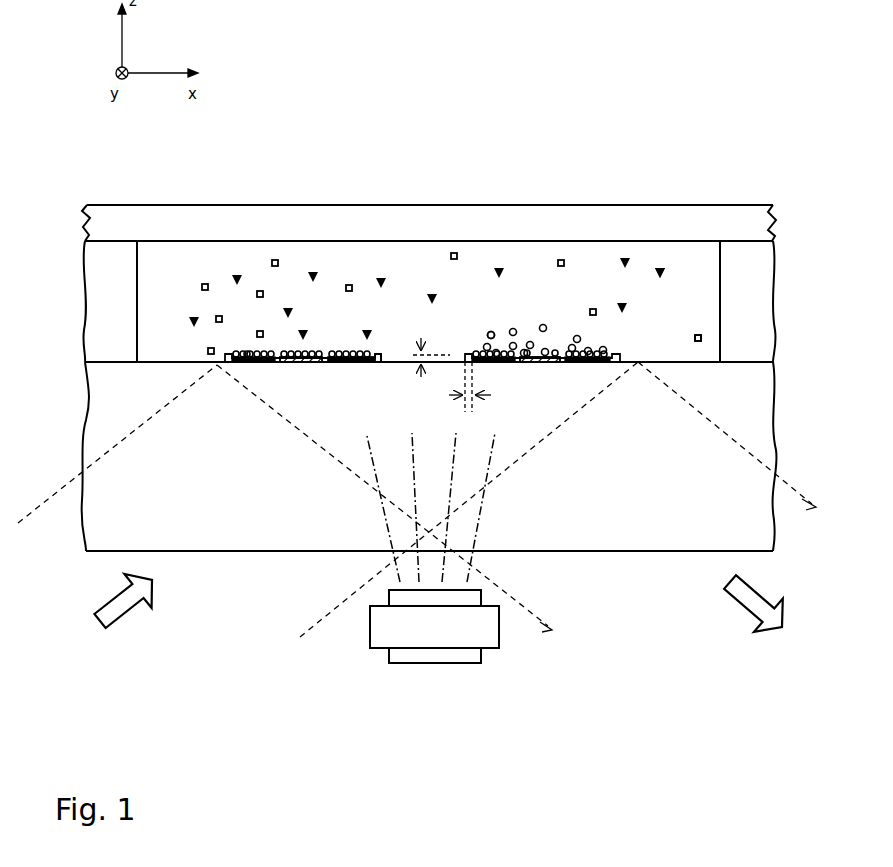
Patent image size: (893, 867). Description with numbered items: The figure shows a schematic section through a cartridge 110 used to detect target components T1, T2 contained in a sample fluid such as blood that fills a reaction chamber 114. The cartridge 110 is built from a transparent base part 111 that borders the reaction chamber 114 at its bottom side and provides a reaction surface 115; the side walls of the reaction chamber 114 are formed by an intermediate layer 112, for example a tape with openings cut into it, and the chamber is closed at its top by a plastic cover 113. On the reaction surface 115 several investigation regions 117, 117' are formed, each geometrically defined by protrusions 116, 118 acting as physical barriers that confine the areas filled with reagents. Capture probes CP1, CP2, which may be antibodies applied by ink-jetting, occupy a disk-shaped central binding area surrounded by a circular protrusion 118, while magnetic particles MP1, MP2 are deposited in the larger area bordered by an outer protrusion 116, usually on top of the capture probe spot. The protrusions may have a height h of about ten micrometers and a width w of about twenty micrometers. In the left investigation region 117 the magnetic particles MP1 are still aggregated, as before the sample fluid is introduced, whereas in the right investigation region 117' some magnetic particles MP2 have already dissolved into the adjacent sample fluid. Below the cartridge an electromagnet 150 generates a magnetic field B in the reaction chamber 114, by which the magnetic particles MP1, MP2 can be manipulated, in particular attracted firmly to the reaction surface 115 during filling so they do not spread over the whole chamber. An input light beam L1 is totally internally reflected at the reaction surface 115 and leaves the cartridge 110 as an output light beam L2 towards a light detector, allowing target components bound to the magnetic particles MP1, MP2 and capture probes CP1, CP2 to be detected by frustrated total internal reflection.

The cartridge 110 is at (674, 174).
The transparent base part 111 is at (100, 414).
The intermediate layer 112 is at (98, 271).
The cover 113 is at (100, 218).
The reaction chamber 114 is at (181, 282).
The reaction surface 115 is at (161, 354).
The outer protrusion 116 is at (378, 357).
The investigation region 117 is at (353, 261).
The investigation region 117' is at (542, 286).
The circular protrusion 118 is at (332, 356).
The electromagnet 150 is at (485, 632).
The magnetic particles MP1 is at (247, 351).
The capture probes CP1 is at (313, 353).
The magnetic particles MP2 is at (491, 332).
The capture probes CP2 is at (553, 357).
The target component T1 is at (660, 271).
The target component T2 is at (695, 337).
The input light beam L1 is at (285, 507).
The output light beam L2 is at (558, 499).
The magnetic field B is at (470, 527).
The height h is at (431, 373).
The width w is at (480, 387).